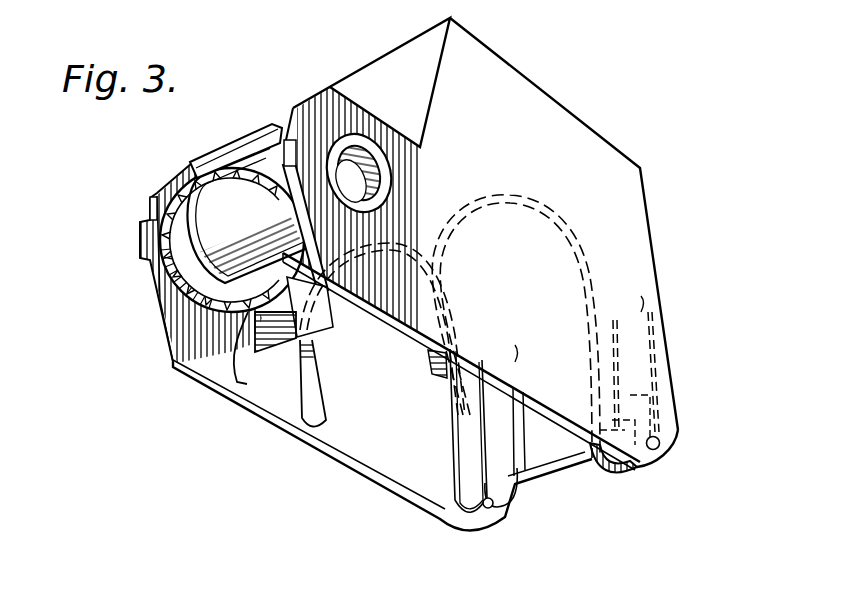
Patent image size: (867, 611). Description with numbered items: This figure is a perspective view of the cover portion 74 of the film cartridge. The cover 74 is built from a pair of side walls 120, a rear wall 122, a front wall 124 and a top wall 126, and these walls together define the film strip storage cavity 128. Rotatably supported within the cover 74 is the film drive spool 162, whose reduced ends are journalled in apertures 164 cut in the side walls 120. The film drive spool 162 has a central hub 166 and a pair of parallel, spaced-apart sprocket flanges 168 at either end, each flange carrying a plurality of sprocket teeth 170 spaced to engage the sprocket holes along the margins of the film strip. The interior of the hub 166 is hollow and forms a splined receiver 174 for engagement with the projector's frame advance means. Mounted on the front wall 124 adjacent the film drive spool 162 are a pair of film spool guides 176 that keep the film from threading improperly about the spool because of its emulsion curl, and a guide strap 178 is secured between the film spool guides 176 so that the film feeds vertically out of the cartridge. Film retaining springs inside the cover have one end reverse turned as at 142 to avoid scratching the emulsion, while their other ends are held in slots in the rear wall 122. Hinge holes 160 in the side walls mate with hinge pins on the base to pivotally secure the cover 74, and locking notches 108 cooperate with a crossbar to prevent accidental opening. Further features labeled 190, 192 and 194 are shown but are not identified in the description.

The cover portion 74 is at (482, 224).
The locking notches 108 is at (294, 138).
The side walls 120 is at (482, 224).
The rear wall 122 is at (553, 457).
The front wall 124 is at (409, 54).
The top wall 126 is at (545, 90).
The film strip storage cavity 128 is at (358, 436).
The reverse turned end 142 is at (305, 420).
The hinge holes 160 is at (484, 500).
The film drive spool 162 is at (262, 150).
The apertures 164 is at (368, 140).
The central hub 166 is at (246, 232).
The sprocket flanges 168 is at (262, 165).
The sprocket teeth 170 is at (178, 236).
The splined receiver 174 is at (375, 173).
The film spool guides 176 is at (240, 380).
The guide strap 178 is at (212, 152).
The tape loop path 190 is at (465, 212).
The retaining tab 192 is at (430, 372).
The guide post 194 is at (495, 470).